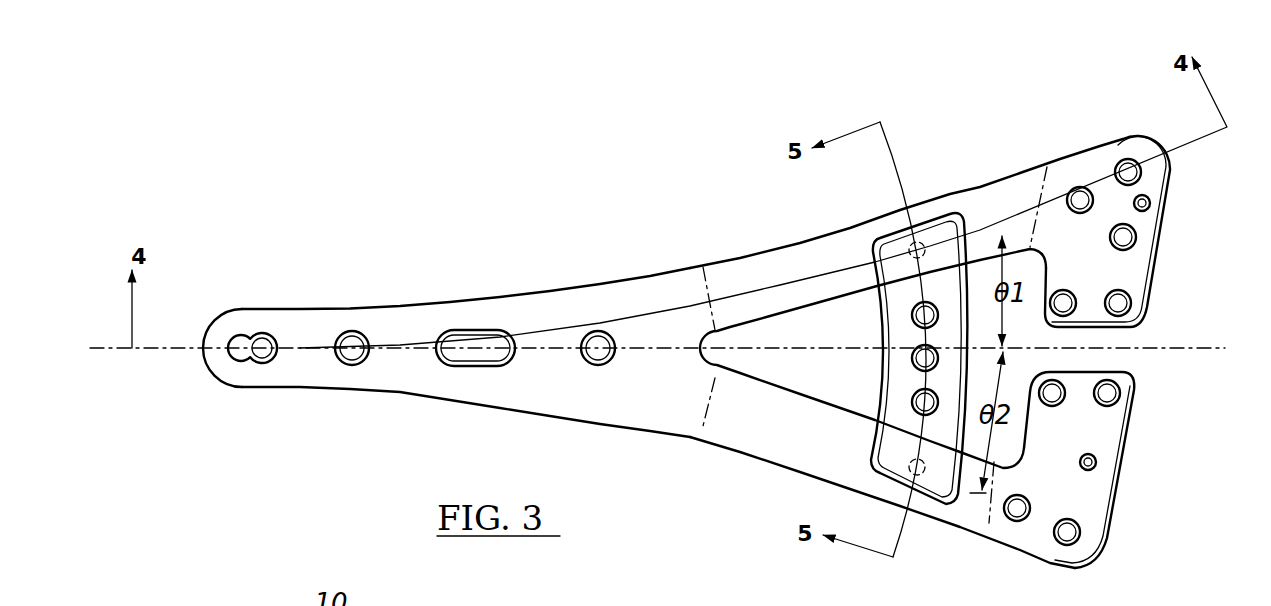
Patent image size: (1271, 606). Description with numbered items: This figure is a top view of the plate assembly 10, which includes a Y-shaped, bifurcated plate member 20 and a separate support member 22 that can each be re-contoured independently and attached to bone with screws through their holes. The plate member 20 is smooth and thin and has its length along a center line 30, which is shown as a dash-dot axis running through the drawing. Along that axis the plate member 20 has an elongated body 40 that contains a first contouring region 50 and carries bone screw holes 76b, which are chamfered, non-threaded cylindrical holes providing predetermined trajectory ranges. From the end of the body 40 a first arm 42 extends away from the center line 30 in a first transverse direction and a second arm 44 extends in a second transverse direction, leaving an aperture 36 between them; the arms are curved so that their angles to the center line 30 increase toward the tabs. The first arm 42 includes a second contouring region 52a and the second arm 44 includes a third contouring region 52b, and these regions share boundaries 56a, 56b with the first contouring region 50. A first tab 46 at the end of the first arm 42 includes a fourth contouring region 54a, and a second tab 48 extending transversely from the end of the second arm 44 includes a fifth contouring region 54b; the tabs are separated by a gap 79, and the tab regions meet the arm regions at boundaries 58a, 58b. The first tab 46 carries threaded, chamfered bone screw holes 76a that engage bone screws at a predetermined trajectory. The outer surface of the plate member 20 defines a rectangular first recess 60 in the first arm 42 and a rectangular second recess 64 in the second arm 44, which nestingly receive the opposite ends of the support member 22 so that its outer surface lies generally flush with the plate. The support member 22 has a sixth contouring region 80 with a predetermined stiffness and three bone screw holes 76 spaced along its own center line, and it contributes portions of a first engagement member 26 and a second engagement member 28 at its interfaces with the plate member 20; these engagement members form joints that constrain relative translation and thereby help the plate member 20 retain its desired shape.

The plate assembly 10 is at (658, 338).
The plate member 20 is at (715, 347).
The support member 22 is at (895, 362).
The first engagement member 26 is at (906, 243).
The second engagement member 28 is at (906, 467).
The center line 30 is at (1195, 345).
The aperture 36 is at (770, 384).
The elongated body 40 is at (299, 325).
The first arm 42 is at (757, 275).
The second arm 44 is at (750, 432).
The first tab 46 is at (1150, 185).
The second tab 48 is at (1095, 513).
The first contouring region 50 is at (537, 397).
The second contouring region 52a is at (771, 277).
The third contouring region 52b is at (789, 451).
The fourth contouring region 54a is at (1136, 208).
The fifth contouring region 54b is at (1094, 464).
The boundary 56a is at (700, 284).
The boundary 56b is at (702, 418).
The boundary 58a is at (1043, 187).
The boundary 58b is at (989, 523).
The first recess 60 is at (937, 214).
The second recess 64 is at (940, 506).
The bone screw holes 76 is at (910, 315).
The threaded bone screw holes 76a is at (1080, 188).
The non-threaded bone screw holes 76b is at (352, 366).
The gap 79 is at (1110, 360).
The sixth contouring region 80 is at (931, 394).